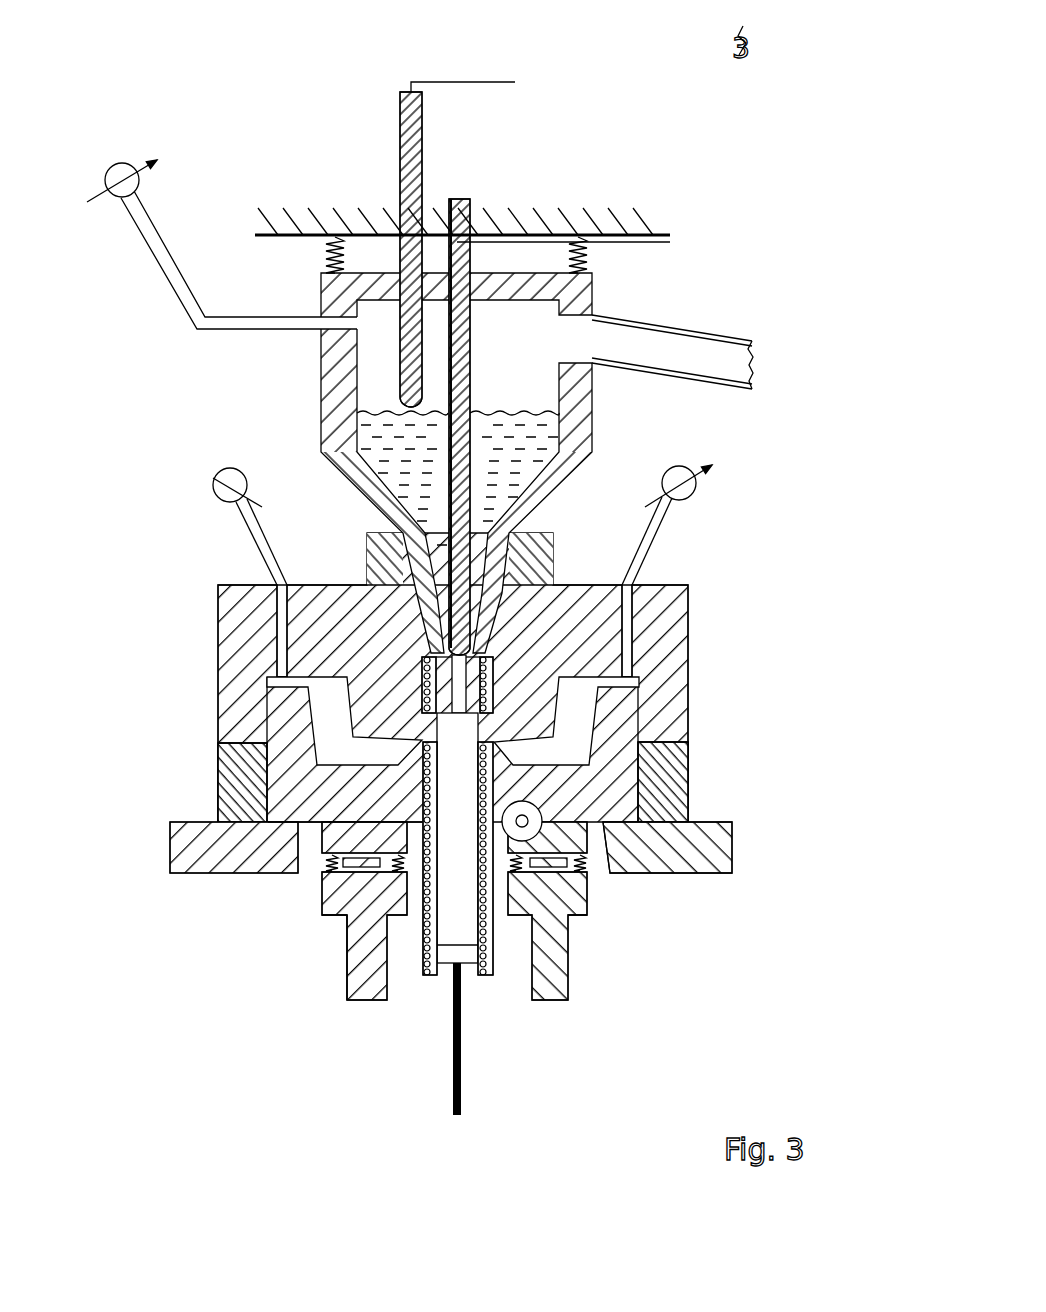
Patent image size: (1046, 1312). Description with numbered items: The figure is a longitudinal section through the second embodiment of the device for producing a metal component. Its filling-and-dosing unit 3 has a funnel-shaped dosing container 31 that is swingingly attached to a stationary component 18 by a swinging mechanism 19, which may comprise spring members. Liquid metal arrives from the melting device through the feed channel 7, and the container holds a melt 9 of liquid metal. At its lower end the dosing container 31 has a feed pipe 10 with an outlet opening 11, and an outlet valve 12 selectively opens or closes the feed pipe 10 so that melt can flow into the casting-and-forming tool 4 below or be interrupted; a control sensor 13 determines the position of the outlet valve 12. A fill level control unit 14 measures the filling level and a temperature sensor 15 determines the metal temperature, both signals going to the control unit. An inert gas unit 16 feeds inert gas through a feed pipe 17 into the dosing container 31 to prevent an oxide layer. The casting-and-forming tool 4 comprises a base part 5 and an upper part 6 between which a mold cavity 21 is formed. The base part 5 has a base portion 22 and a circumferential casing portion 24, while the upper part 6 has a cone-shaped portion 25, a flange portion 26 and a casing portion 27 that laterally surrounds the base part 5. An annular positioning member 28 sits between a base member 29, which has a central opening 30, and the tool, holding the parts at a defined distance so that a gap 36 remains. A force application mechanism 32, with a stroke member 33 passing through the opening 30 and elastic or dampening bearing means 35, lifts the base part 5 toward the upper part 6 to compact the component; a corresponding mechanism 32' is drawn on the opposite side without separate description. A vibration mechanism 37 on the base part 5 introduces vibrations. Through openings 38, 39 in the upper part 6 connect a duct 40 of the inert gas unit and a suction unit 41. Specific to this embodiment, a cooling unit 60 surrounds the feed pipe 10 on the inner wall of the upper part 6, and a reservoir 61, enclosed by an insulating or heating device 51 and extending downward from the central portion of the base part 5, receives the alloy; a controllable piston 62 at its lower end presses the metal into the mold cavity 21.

The filling-and-dosing unit 3 is at (196, 384).
The casting-and-forming tool 4 is at (134, 663).
The base part 5 is at (648, 770).
The upper part 6 is at (692, 603).
The feed channel 7 is at (739, 339).
The melt 9 is at (545, 433).
The feed pipe 10 is at (430, 693).
The outlet opening 11 is at (430, 733).
The outlet valve 12 is at (471, 352).
The control sensor 13 is at (669, 241).
The fill level control unit 14 is at (423, 133).
The temperature sensor 15 is at (477, 82).
The inert gas unit 16 is at (113, 165).
The feed pipe 17 is at (167, 257).
The stationary component 18 is at (536, 232).
The swinging mechanism 19 is at (592, 258).
The mold cavity 21 is at (250, 830).
The base portion 22 is at (276, 836).
The casing portion 24 is at (290, 748).
The cone-shaped portion 25 is at (637, 733).
The flange portion 26 is at (313, 590).
The casing portion 27 is at (638, 712).
The positioning member 28 is at (225, 795).
The base member 29 is at (173, 860).
The central opening 30 is at (340, 858).
The dosing container 31 is at (326, 375).
The force application mechanism 32 is at (279, 984).
The actuator 32' is at (616, 966).
The stroke member 33 is at (352, 978).
The bearing means 35 is at (350, 915).
The gap 36 is at (640, 693).
The vibration mechanism 37 is at (588, 868).
The through opening 38 is at (277, 622).
The through opening 39 is at (657, 587).
The duct 40 is at (240, 520).
The suction unit 41 is at (700, 484).
The insulating or heating device 51 is at (426, 950).
The cooling unit 60 is at (490, 693).
The reservoir 61 is at (497, 934).
The controllable piston 62 is at (465, 1050).